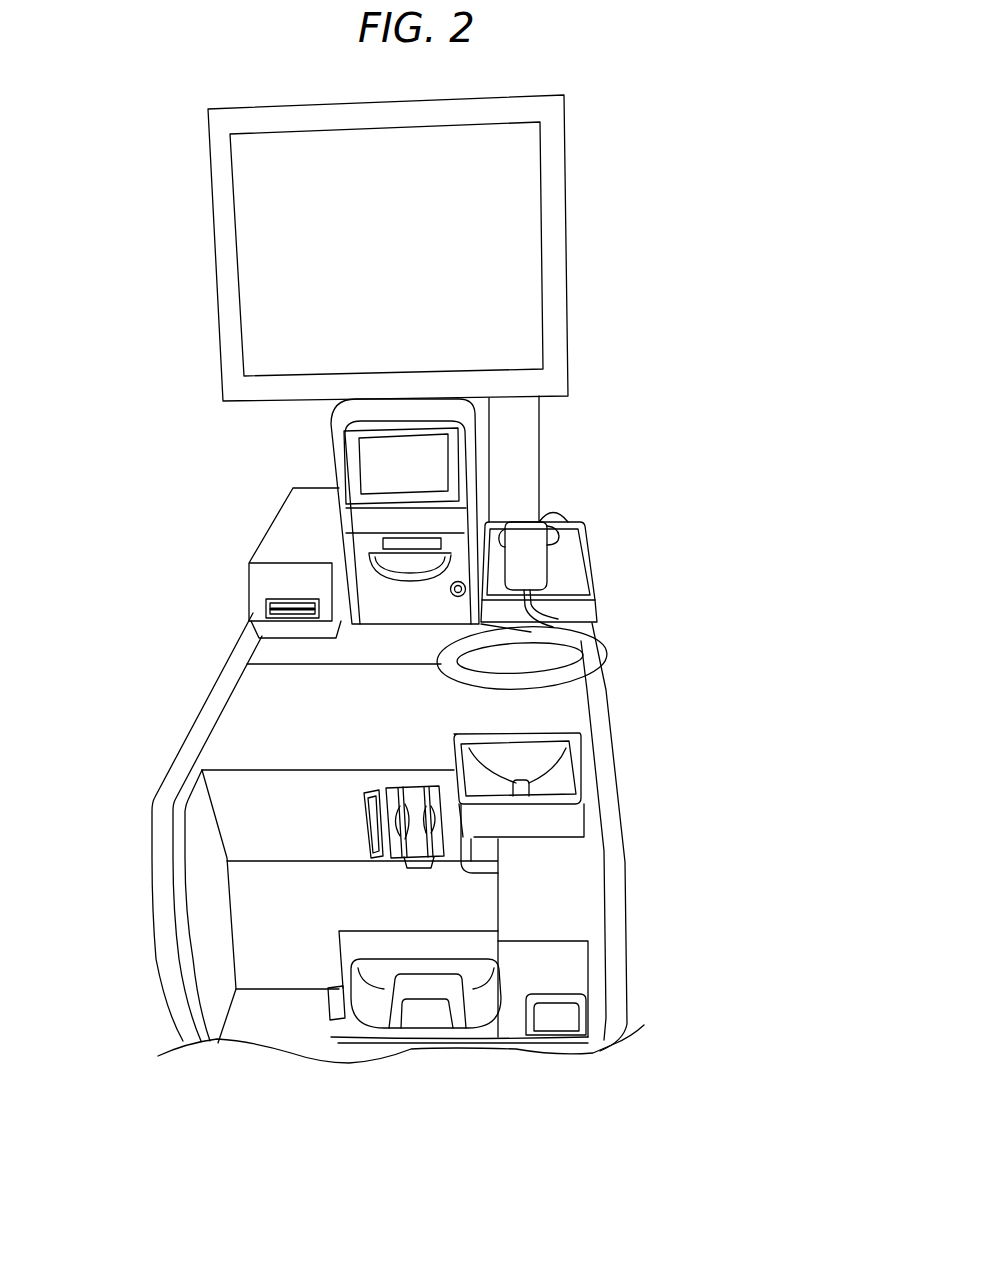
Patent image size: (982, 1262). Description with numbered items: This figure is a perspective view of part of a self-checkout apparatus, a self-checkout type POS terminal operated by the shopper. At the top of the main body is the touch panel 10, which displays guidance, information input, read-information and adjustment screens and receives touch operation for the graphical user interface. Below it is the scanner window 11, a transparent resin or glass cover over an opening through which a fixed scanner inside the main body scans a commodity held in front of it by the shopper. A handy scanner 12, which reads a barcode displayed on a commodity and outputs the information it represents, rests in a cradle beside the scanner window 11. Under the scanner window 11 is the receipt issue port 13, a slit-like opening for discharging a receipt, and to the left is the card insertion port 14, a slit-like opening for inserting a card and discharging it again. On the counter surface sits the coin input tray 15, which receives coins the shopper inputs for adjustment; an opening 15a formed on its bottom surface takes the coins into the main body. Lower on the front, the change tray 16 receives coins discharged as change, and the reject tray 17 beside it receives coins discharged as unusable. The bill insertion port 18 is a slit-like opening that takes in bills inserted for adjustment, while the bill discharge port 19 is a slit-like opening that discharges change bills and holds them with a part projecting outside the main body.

The touch panel 10 is at (505, 203).
The scanner window 11 is at (408, 463).
The handy scanner 12 is at (528, 560).
The receipt issue port 13 is at (382, 542).
The card insertion port 14 is at (265, 605).
The coin input tray 15 is at (600, 774).
The opening 15a is at (528, 784).
The change tray 16 is at (423, 1012).
The reject tray 17 is at (553, 1018).
The bill insertion port 18 is at (418, 840).
The bill discharge port 19 is at (372, 822).